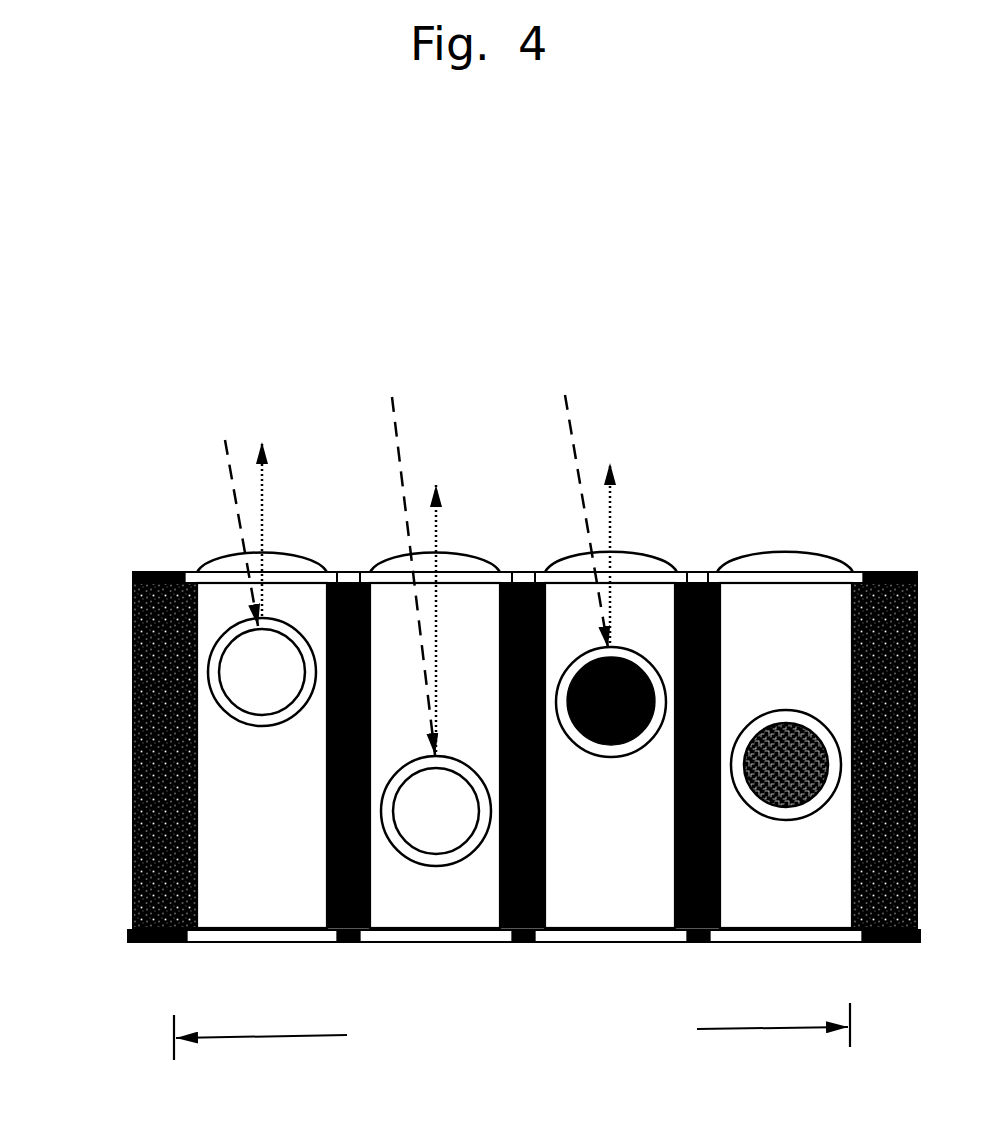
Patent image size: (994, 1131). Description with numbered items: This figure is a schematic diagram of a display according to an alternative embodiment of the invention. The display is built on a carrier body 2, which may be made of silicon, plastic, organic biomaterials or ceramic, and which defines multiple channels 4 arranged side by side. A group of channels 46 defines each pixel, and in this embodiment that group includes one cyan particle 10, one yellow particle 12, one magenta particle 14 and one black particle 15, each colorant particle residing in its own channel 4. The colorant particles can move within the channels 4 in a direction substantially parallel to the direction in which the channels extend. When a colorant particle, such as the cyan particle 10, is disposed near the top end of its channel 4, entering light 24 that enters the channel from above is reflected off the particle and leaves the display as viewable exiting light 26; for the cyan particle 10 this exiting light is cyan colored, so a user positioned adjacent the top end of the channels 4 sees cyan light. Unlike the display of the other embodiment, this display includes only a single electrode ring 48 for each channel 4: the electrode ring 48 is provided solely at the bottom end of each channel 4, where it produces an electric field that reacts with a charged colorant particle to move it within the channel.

The carrier body 2 is at (143, 658).
The channel 4 is at (240, 778).
The cyan particle 10 is at (270, 725).
The yellow particle 12 is at (442, 865).
The magenta particle 14 is at (608, 756).
The black particle 15 is at (752, 817).
The entering light 24 is at (222, 423).
The viewable exiting light 26 is at (262, 492).
The group of channels 46 is at (512, 1031).
The electrode ring 48 is at (217, 942).